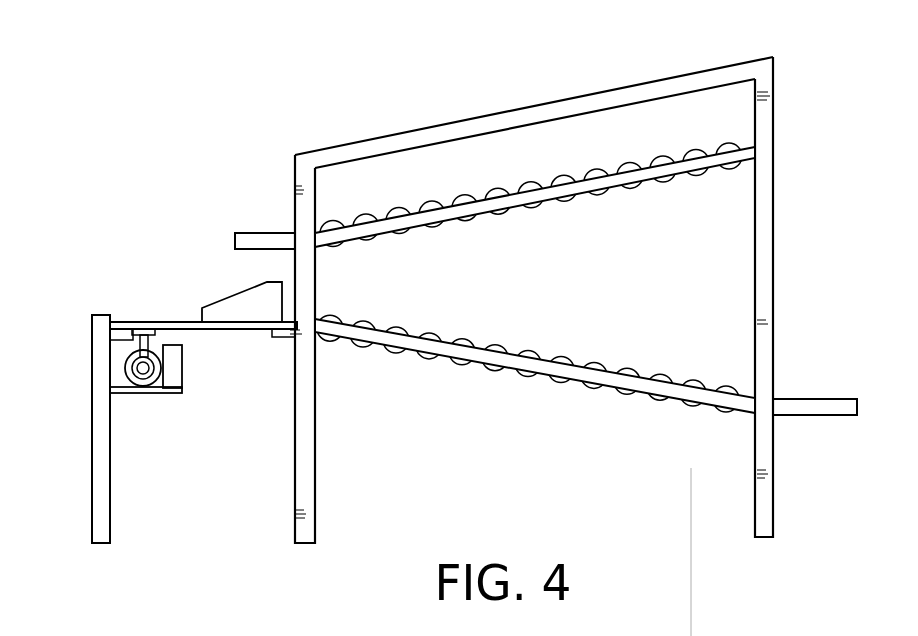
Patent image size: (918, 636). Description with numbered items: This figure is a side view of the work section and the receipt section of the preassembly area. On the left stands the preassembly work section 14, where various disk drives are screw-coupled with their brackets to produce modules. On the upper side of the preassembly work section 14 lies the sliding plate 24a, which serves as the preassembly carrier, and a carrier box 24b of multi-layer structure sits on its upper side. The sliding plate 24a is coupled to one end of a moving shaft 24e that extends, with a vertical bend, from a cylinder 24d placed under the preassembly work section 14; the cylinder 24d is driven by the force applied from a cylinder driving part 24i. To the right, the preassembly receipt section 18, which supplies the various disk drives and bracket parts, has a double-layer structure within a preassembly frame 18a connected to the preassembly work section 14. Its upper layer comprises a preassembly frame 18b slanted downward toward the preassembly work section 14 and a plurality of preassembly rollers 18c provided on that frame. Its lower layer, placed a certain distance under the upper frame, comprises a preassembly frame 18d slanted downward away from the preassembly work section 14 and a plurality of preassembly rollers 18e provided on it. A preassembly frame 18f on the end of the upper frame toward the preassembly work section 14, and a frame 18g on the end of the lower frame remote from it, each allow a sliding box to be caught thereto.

The preassembly work section 14 is at (102, 510).
The preassembly receipt section 18 is at (541, 277).
The preassembly frame 18a is at (527, 118).
The preassembly frame 18b is at (725, 157).
The preassembly rollers 18c is at (720, 147).
The preassembly frame 18d is at (685, 392).
The preassembly rollers 18e is at (705, 385).
The preassembly frame 18f is at (260, 240).
The frame 18g is at (815, 415).
The sliding plate 24a is at (137, 320).
The carrier box 24b is at (228, 300).
The cylinder 24d is at (126, 378).
The moving shaft 24e is at (137, 352).
The cylinder driving part 24i is at (173, 372).